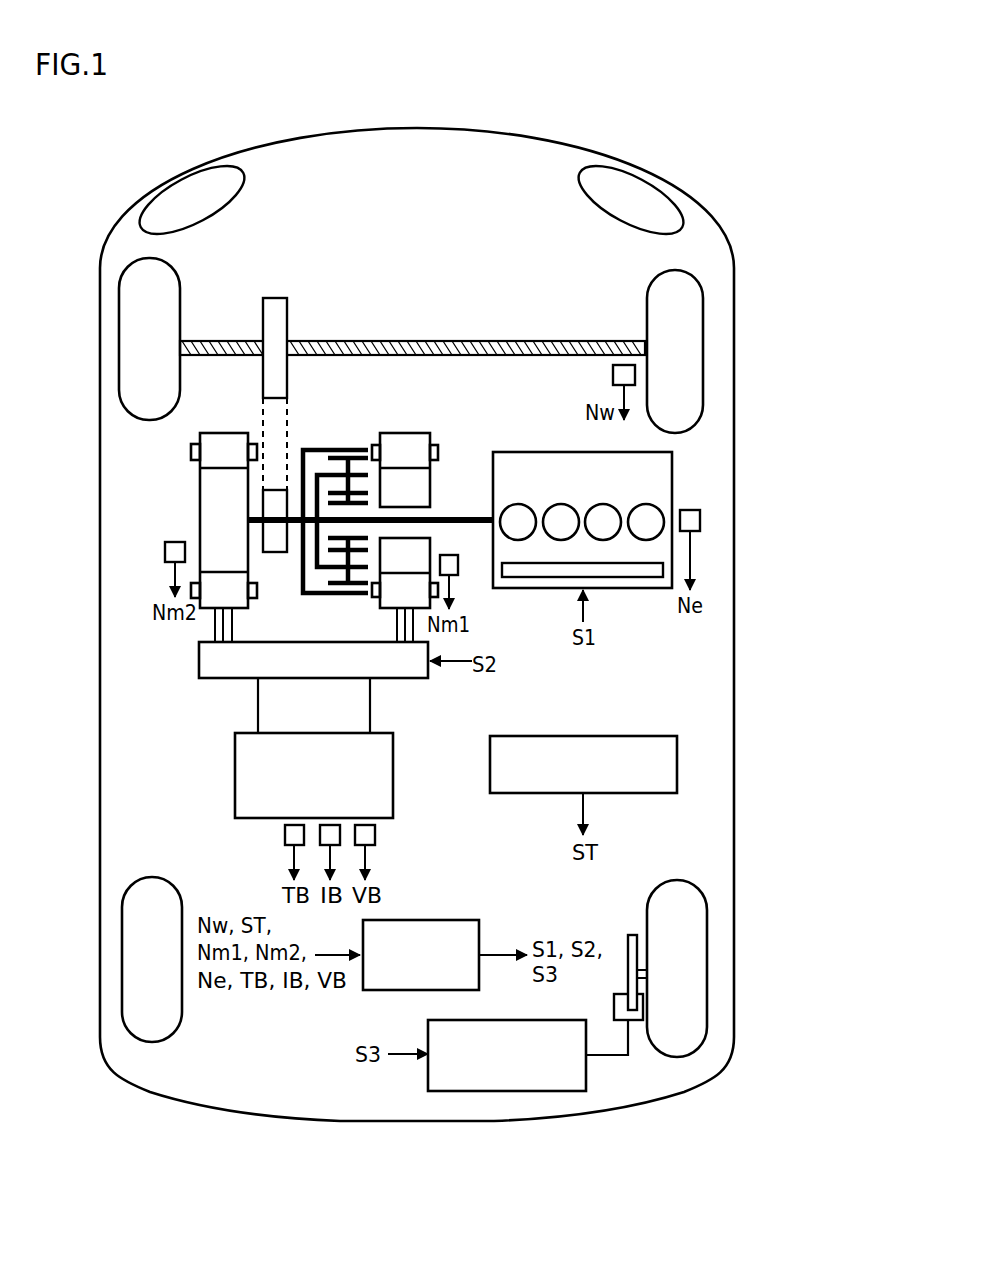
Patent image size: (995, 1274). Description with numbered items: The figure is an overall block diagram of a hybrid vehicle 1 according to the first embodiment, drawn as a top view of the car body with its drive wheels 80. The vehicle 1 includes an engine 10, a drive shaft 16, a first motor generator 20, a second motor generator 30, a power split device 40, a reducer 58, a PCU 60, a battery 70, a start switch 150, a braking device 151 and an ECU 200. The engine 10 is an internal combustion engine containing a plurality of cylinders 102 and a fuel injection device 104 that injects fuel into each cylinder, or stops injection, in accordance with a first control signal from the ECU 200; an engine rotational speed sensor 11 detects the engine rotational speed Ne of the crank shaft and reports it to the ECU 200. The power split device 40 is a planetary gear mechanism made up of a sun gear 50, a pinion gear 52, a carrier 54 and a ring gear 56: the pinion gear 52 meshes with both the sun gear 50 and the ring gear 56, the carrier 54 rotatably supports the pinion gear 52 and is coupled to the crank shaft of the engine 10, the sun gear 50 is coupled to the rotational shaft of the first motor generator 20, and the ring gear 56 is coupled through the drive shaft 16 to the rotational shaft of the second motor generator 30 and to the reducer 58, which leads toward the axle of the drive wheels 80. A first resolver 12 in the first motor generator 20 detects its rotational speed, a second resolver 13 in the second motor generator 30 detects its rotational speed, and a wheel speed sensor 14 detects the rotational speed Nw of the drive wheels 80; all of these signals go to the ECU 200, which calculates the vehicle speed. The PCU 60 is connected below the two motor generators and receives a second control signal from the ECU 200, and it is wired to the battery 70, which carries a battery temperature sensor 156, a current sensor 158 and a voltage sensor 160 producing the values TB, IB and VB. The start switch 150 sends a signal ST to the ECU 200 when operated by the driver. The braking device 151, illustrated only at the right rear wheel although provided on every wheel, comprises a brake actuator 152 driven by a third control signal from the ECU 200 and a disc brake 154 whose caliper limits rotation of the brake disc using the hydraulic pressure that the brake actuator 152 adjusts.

The vehicle 1 is at (408, 101).
The engine 10 is at (582, 520).
The engine rotational speed sensor 11 is at (688, 508).
The first resolver 12 is at (451, 555).
The second resolver 13 is at (177, 540).
The wheel speed sensor 14 is at (613, 373).
The drive shaft 16 is at (296, 527).
The first motor generator 20 is at (405, 433).
The second motor generator 30 is at (226, 433).
The power split device 40 is at (336, 505).
The sun gear 50 is at (357, 537).
The pinion gear 52 is at (357, 585).
The carrier 54 is at (319, 568).
The ring gear 56 is at (327, 449).
The reducer 58 is at (276, 298).
The PCU 60 is at (200, 660).
The battery 70 is at (235, 773).
The drive wheels 80 is at (657, 272).
The cylinders 102 is at (560, 503).
The fuel injection device 104 is at (625, 578).
The start switch 150 is at (627, 737).
The braking device 151 is at (617, 954).
The brake actuator 152 is at (543, 1018).
The disc brake 154 is at (640, 1034).
The battery temperature sensor 156 is at (285, 835).
The current sensor 158 is at (335, 825).
The voltage sensor 160 is at (377, 835).
The ECU 200 is at (447, 918).